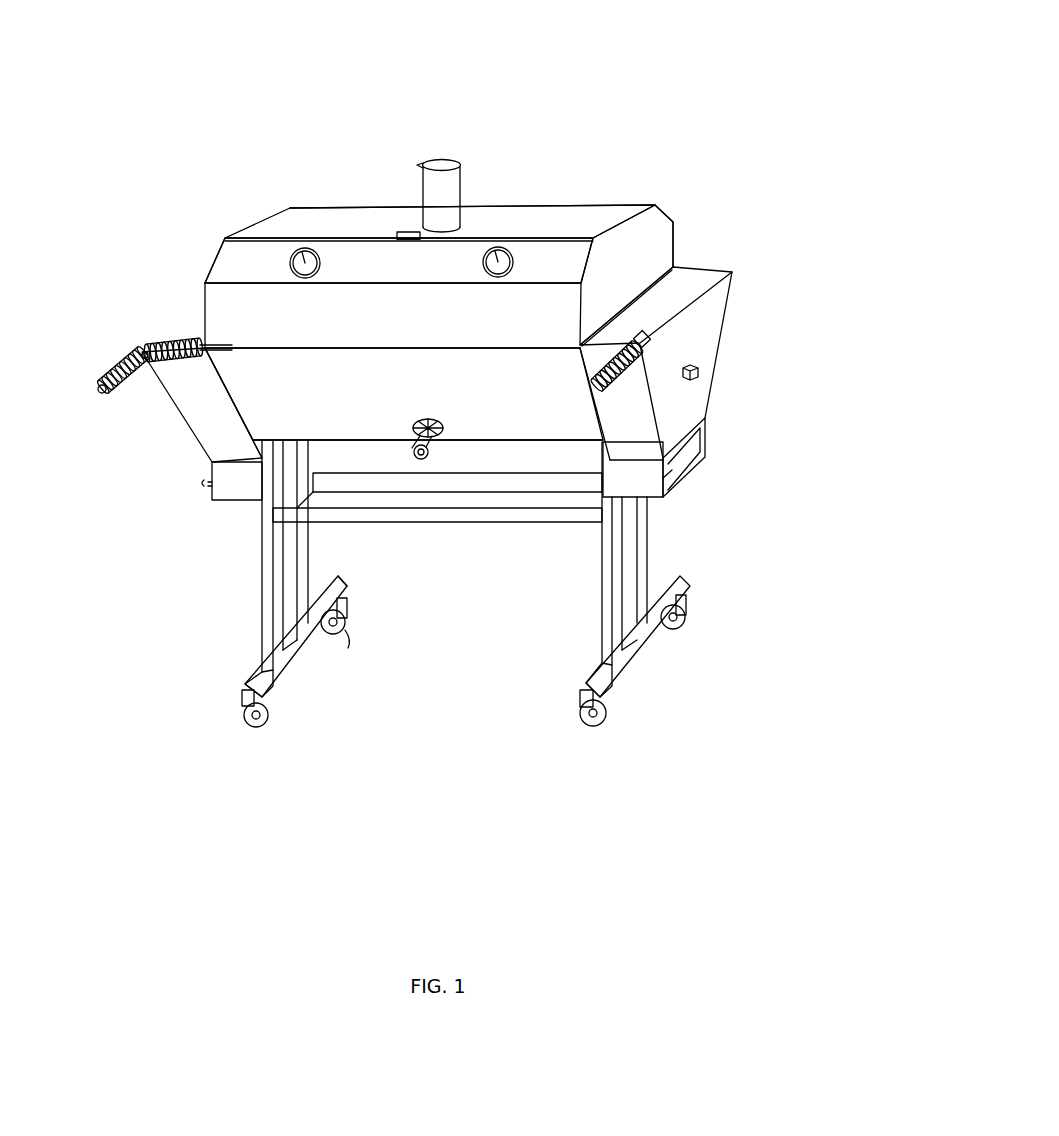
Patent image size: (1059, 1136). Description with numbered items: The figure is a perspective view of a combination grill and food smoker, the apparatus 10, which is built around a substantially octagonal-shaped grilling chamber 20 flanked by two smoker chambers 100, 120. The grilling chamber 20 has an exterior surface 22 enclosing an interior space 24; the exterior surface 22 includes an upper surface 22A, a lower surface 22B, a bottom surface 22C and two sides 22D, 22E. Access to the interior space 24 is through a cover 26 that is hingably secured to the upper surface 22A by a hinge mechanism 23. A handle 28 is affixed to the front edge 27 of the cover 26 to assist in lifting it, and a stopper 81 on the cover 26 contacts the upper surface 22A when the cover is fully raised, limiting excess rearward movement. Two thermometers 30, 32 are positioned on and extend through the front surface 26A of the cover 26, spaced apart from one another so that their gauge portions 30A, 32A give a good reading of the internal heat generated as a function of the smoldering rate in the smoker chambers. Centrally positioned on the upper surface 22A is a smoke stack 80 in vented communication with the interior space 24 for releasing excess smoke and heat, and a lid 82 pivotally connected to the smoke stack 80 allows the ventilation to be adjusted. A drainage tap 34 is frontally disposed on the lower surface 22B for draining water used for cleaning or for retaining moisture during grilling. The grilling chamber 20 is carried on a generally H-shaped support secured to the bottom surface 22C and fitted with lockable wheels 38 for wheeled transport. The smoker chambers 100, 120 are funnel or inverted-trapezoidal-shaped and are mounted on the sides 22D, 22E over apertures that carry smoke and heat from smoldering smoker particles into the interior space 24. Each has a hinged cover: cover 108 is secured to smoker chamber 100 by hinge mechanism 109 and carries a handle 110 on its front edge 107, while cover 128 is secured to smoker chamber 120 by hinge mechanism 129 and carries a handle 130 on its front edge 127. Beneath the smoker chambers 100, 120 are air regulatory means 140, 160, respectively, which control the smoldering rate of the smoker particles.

The apparatus 10 is at (738, 66).
The grilling chamber 20 is at (599, 188).
The exterior surface 22 is at (315, 213).
The upper surface 22A is at (623, 210).
The lower surface 22B is at (528, 413).
The bottom surface 22C is at (355, 442).
The side 22D is at (208, 265).
The side 22E is at (660, 233).
The hinge mechanism 23 is at (396, 231).
The interior space 24 is at (328, 356).
The cover 26 is at (220, 252).
The front surface 26A is at (457, 252).
The front edge 27 is at (417, 347).
The handle 28 is at (178, 357).
The thermometer 30 is at (322, 257).
The gauge portion 30A is at (290, 262).
The thermometer 32 is at (516, 256).
The gauge portion 32A is at (505, 280).
The drainage tap 34 is at (432, 413).
The lockable wheels 38 is at (342, 630).
The smoke stack 80 is at (465, 180).
The stopper 81 is at (406, 231).
The lid 82 is at (442, 160).
The smoker chamber 100 is at (165, 395).
The front edge 107 is at (147, 350).
The cover 108 is at (157, 333).
The hinge mechanism 109 is at (200, 326).
The handle 110 is at (100, 383).
The smoker chamber 120 is at (730, 318).
The front edge 127 is at (665, 330).
The cover 128 is at (703, 278).
The hinge mechanism 129 is at (650, 292).
The handle 130 is at (627, 372).
The air regulatory means 140 is at (207, 497).
The air regulatory means 160 is at (700, 480).